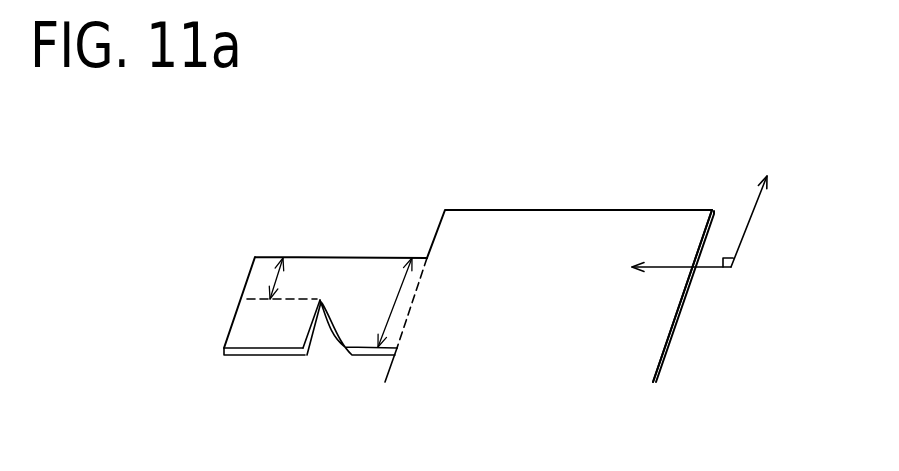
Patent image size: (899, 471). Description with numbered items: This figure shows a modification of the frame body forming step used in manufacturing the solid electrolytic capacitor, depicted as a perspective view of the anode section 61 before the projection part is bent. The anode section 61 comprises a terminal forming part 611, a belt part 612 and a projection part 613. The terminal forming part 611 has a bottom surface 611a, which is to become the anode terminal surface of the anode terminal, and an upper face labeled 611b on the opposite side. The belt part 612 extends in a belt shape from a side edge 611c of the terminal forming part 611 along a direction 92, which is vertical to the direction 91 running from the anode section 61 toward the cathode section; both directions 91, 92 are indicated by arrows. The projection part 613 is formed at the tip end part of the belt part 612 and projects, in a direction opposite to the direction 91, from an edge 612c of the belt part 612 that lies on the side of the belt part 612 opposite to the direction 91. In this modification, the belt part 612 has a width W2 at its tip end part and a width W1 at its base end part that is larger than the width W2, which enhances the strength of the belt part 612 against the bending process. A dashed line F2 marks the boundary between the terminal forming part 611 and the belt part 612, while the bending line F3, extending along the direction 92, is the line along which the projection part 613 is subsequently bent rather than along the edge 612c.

The anode section 61 is at (463, 280).
The terminal forming part 611 is at (497, 225).
The bottom surface 611a is at (652, 310).
The upper surface of base plate portion 611b is at (638, 247).
The side edge 611c is at (383, 368).
The belt part 612 is at (355, 272).
The edge of the belt part 612c is at (345, 357).
The projection part 613 is at (267, 328).
The direction 91 is at (752, 222).
The direction 92 is at (673, 268).
The second fold line F2 is at (413, 302).
The bending line F3 is at (250, 307).
The width of base end part W1 is at (387, 302).
The width of tip end part W2 is at (293, 278).